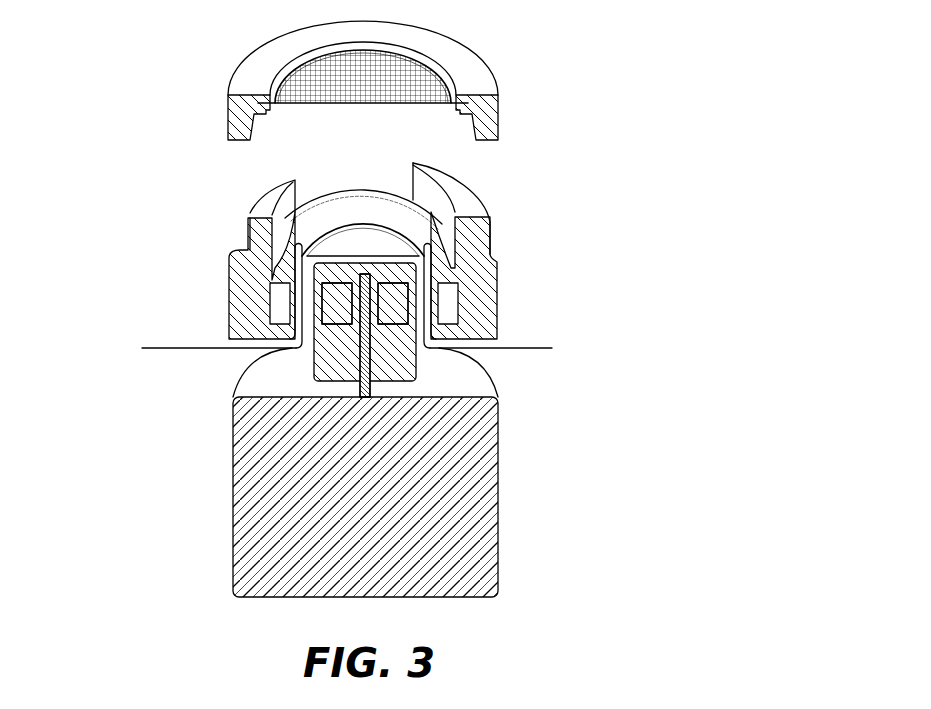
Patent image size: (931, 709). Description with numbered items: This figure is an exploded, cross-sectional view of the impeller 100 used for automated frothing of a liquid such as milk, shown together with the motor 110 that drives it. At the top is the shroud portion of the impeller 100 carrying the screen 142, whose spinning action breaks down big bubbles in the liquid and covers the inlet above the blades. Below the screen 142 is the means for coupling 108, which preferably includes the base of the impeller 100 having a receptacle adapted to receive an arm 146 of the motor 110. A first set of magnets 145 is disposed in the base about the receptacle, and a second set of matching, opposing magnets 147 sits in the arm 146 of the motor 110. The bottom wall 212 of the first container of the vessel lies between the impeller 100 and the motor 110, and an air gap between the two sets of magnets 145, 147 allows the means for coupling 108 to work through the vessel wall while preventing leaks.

The impeller 100 is at (186, 65).
The screen 142 is at (300, 100).
The means for coupling 108 is at (540, 331).
The first set of magnets 145 is at (267, 308).
The arm 146 is at (315, 362).
The second set of magnets 147 is at (395, 309).
The bottom wall 212 is at (166, 343).
The motor 110 is at (480, 568).